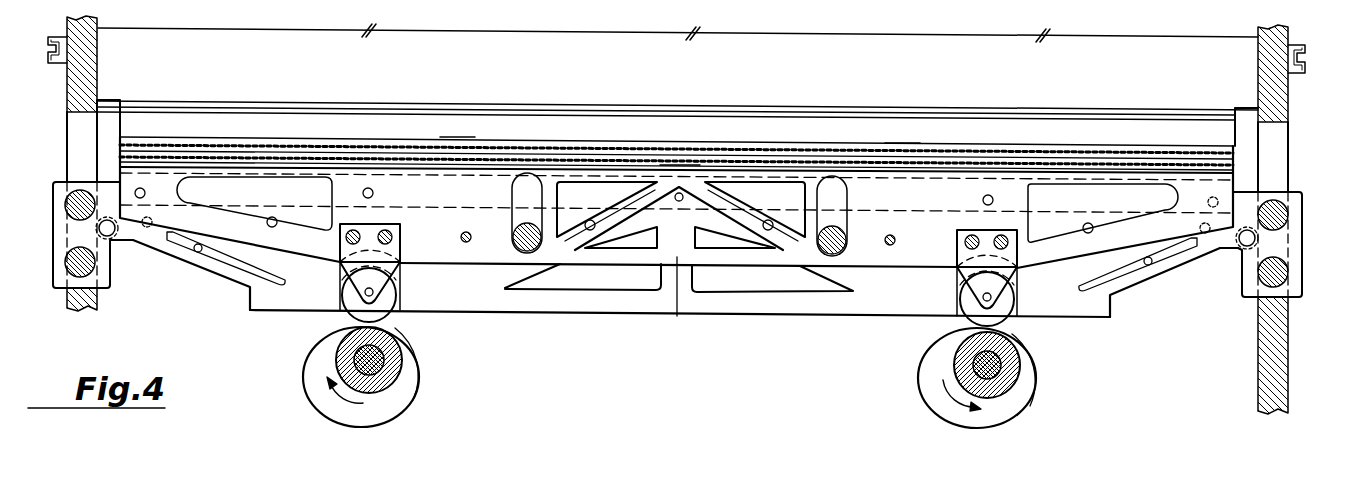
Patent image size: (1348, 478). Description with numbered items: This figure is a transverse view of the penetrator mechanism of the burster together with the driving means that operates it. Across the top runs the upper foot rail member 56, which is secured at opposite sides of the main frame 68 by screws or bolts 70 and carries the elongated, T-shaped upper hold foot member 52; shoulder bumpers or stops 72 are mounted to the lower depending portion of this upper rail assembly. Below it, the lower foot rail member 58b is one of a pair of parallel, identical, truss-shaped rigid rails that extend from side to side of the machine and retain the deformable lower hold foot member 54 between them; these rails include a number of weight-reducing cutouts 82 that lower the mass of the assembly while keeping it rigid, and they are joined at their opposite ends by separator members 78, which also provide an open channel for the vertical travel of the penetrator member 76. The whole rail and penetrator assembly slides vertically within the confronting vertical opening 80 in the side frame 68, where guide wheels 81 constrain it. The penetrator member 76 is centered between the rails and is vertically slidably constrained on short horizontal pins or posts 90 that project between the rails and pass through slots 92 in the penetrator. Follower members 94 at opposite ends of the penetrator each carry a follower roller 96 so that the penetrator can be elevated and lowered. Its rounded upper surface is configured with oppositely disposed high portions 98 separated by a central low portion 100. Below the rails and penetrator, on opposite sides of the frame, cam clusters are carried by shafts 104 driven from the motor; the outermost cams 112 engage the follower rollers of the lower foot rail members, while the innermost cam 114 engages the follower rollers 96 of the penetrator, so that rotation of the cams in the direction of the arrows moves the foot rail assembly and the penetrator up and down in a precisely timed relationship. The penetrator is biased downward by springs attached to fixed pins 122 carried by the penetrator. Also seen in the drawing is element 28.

The chain 28 is at (122, 144).
The upper hold foot member 52 is at (278, 124).
The lower hold foot member 54 is at (1236, 167).
The upper foot rail member 56 is at (617, 75).
The lower foot rail member 58b is at (601, 303).
The main frame 68 is at (67, 82).
The screws or bolts 70 is at (53, 38).
The shoulder bumpers or stops 72 is at (1053, 116).
The penetrator member 76 is at (678, 304).
The separator members 78 is at (66, 258).
The vertical opening 80 is at (70, 128).
The guide wheels 81 is at (110, 234).
The weight-reducing cutouts 82 is at (200, 251).
The pins or posts 90 is at (518, 250).
The slots 92 is at (514, 226).
The follower members 94 is at (340, 278).
The follower roller 96 is at (352, 306).
The high portions 98 is at (458, 135).
The central low portion 100 is at (675, 168).
The shafts 104 is at (380, 372).
The cams 112 is at (418, 355).
The cam 114 is at (318, 370).
The fixed pins 122 is at (461, 239).